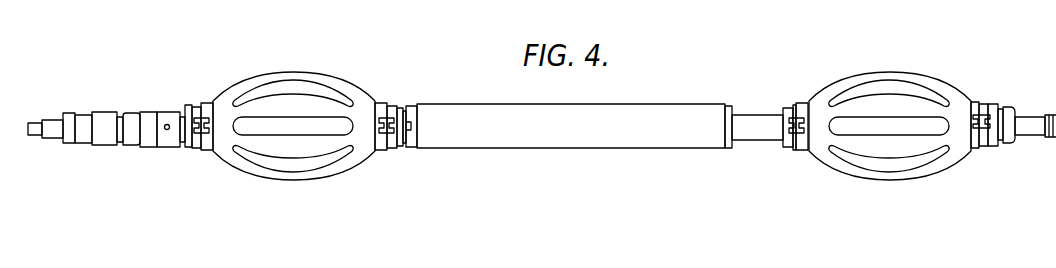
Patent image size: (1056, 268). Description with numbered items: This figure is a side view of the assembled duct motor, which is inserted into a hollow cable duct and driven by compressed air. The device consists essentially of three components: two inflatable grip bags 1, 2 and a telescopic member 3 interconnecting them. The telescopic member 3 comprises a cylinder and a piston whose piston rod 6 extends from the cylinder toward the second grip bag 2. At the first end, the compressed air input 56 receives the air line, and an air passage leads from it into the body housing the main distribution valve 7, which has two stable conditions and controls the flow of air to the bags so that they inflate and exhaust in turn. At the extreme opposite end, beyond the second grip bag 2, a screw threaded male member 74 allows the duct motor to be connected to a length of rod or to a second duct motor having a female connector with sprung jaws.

The inflatable grip bag 1 is at (343, 88).
The inflatable grip bag 2 is at (836, 89).
The telescopic member 3 is at (558, 104).
The piston rod 6 is at (748, 116).
The distribution valve 7 is at (146, 117).
The compressed air input 56 is at (34, 122).
The screw threaded male member 74 is at (1054, 113).